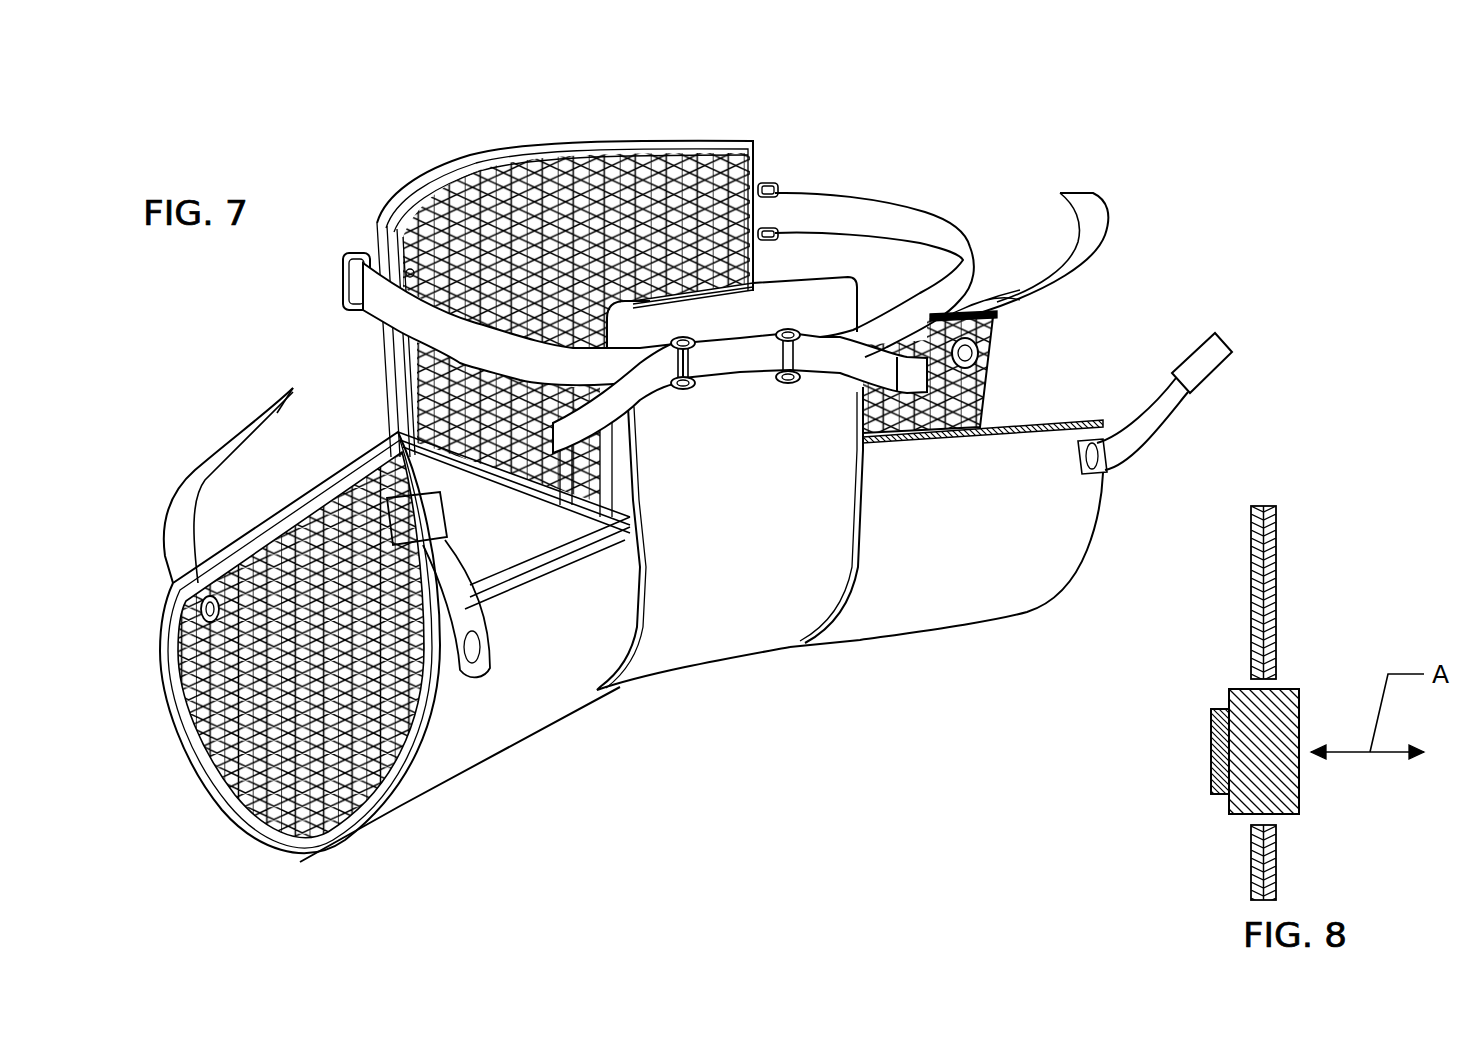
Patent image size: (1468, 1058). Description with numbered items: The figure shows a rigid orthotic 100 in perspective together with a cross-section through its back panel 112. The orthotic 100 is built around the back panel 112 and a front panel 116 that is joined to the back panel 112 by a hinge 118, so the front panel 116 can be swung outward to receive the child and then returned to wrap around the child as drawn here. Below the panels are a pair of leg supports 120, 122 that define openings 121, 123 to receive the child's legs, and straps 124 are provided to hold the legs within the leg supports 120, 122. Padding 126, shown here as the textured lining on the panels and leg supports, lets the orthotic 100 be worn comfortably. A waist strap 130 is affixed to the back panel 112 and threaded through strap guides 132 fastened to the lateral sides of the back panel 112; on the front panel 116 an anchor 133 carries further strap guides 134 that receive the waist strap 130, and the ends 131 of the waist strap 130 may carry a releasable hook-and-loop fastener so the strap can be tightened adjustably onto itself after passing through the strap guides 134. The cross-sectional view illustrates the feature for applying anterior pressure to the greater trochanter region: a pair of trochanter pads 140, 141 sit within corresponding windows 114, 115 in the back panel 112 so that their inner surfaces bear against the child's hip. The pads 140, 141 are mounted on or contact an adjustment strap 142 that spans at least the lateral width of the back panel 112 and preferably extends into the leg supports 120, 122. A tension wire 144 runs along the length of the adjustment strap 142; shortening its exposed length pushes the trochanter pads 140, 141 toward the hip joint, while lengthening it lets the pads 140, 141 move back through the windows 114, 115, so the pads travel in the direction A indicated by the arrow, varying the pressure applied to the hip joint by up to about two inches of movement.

In FIG. 7, the rigid orthotic 100 is at (1002, 67).
In FIG. 7, the back panel 112 is at (390, 193).
In FIG. 8, the back panel 112 is at (1249, 545).
In FIG. 8, the window 114 is at (1273, 685).
In FIG. 8, the window 115 is at (1273, 685).
In FIG. 7, the front panel 116 is at (710, 623).
In FIG. 7, the hinge 118 is at (607, 690).
In FIG. 7, the leg support 120 is at (997, 563).
In FIG. 7, the opening 121 is at (987, 410).
In FIG. 7, the leg support 122 is at (453, 783).
In FIG. 7, the opening 123 is at (190, 723).
In FIG. 7, the straps 124 is at (277, 413).
In FIG. 7, the padding 126 is at (540, 198).
In FIG. 8, the padding 126 is at (1271, 565).
In FIG. 7, the waist strap 130 is at (887, 217).
In FIG. 7, the ends 131 is at (883, 355).
In FIG. 7, the strap guides 132 is at (776, 185).
In FIG. 7, the anchor 133 is at (722, 367).
In FIG. 7, the strap guides 134 is at (693, 390).
In FIG. 8, the trochanter pad 140 is at (1282, 794).
In FIG. 8, the trochanter pad 141 is at (1282, 794).
In FIG. 8, the adjustment strap 142 is at (1213, 720).
In FIG. 8, the tension wire 144 is at (1229, 723).